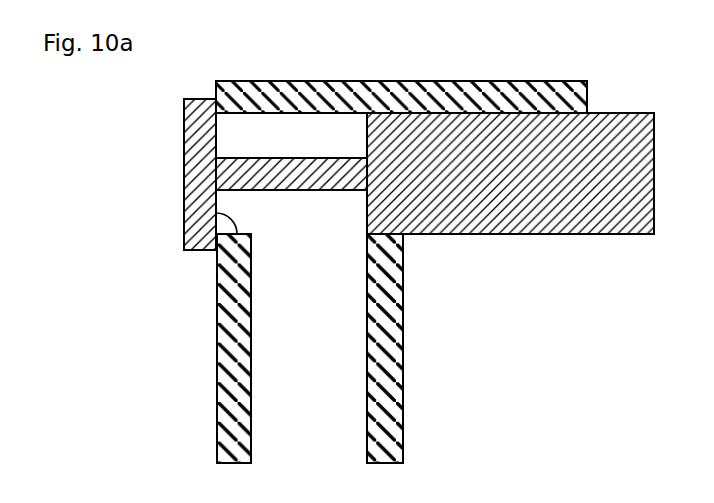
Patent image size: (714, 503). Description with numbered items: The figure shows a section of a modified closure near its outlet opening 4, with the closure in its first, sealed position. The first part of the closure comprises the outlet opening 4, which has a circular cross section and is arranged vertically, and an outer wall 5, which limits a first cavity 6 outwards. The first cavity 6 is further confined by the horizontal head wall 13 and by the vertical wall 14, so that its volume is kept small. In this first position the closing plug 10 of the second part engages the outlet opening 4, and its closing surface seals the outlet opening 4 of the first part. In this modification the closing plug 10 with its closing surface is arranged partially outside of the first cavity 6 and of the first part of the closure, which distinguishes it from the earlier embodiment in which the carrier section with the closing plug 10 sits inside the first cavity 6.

The closing plug 10 is at (207, 147).
The horizontal head wall 13 is at (525, 82).
The outlet opening 4 is at (216, 214).
The outer wall 5 is at (223, 343).
The first cavity 6 is at (318, 293).
The vertical wall 14 is at (395, 353).